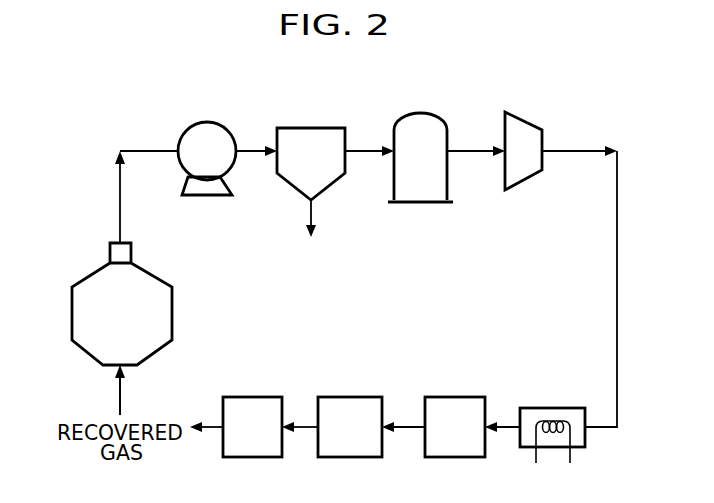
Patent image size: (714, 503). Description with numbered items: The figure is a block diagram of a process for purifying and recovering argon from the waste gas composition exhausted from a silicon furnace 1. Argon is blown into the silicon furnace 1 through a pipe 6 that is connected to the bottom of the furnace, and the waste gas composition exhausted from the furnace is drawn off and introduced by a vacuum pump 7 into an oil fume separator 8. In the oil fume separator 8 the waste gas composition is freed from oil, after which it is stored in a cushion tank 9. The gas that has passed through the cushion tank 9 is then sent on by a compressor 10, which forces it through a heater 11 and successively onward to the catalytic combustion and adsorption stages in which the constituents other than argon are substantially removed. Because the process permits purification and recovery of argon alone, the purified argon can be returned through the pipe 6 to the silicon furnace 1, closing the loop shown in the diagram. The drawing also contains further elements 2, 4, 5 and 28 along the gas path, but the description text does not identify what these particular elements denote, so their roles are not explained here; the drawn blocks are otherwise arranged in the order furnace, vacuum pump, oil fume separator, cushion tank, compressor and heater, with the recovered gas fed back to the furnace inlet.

The silicon furnace 1 is at (72, 315).
The recovered gas inlet line 2 is at (118, 393).
The blower 4 is at (207, 122).
The dust collector 5 is at (309, 128).
The pipe 6 is at (420, 113).
The vacuum pump 7 is at (520, 118).
The oil fume separator 8 is at (550, 408).
The cushion tank 9 is at (455, 397).
The compressor 10 is at (347, 397).
The heater 11 is at (248, 397).
The gas line 28 is at (510, 428).